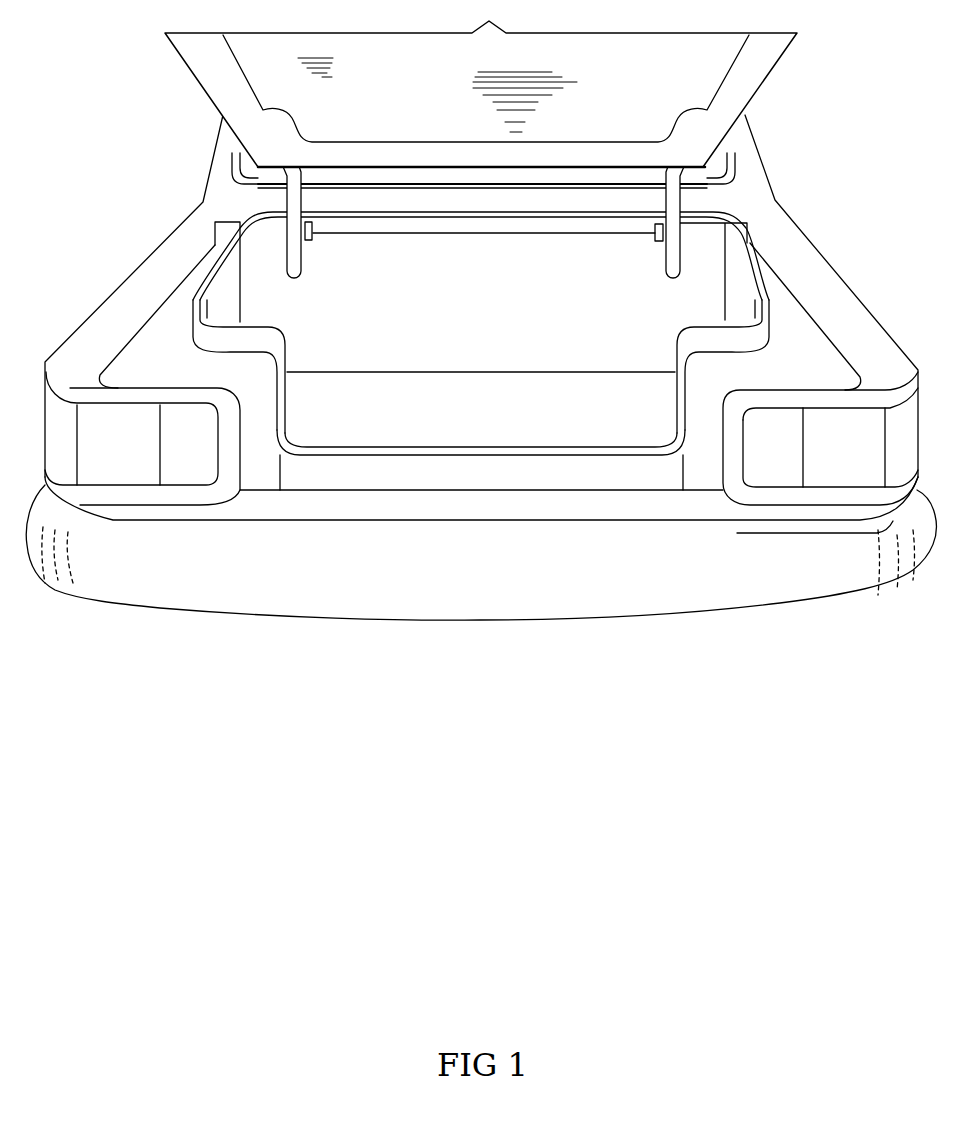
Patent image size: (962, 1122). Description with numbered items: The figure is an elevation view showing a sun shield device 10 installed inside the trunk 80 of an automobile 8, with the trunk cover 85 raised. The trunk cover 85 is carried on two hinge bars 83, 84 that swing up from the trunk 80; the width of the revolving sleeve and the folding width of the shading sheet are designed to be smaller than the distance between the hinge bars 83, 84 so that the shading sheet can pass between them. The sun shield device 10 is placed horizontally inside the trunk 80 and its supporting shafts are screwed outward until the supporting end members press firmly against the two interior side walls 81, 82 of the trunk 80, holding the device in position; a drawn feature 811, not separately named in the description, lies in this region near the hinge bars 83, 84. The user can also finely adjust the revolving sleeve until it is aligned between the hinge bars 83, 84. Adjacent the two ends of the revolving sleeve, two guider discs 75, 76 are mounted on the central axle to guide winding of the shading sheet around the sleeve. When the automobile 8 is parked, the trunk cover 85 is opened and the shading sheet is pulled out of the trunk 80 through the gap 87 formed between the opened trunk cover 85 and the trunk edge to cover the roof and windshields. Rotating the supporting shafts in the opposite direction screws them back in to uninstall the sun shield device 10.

The automobile 8 is at (168, 587).
The sun shield device 10 is at (438, 242).
The guider disc 75 is at (312, 244).
The guider disc 76 is at (655, 240).
The trunk 80 is at (504, 410).
The interior side wall 81 is at (223, 295).
The interior side wall 82 is at (740, 300).
The hinge bar 83 is at (227, 202).
The hinge bar 84 is at (675, 203).
The trunk cover 85 is at (663, 62).
The gap 87 is at (475, 196).
The ledge 811 is at (560, 218).